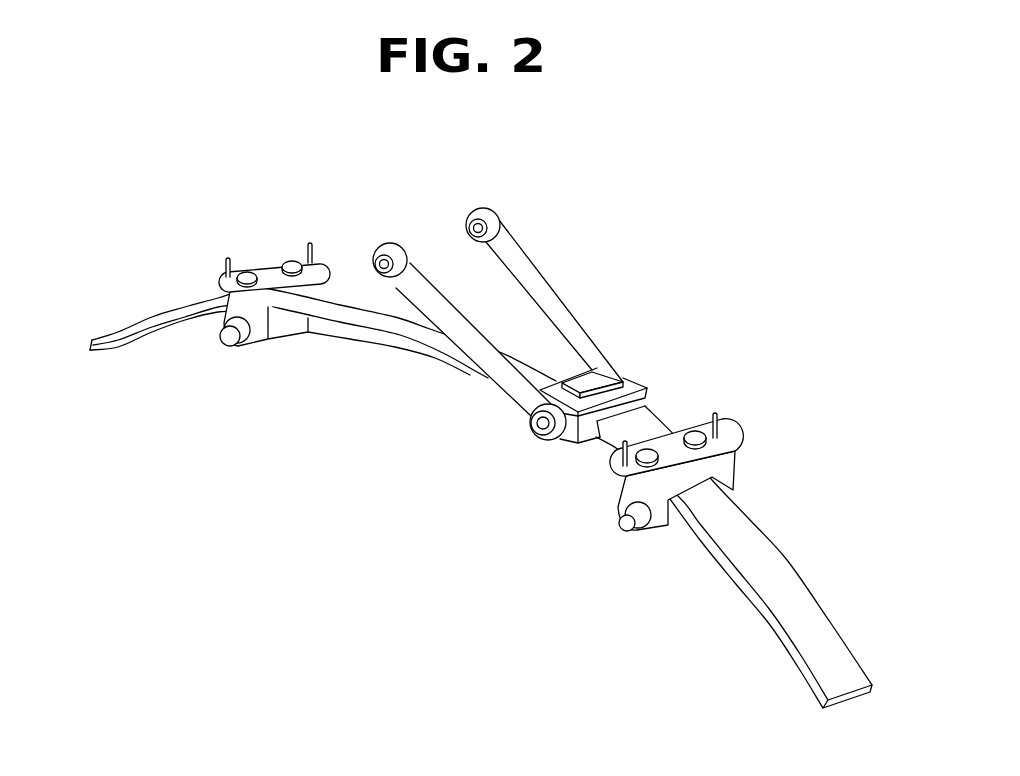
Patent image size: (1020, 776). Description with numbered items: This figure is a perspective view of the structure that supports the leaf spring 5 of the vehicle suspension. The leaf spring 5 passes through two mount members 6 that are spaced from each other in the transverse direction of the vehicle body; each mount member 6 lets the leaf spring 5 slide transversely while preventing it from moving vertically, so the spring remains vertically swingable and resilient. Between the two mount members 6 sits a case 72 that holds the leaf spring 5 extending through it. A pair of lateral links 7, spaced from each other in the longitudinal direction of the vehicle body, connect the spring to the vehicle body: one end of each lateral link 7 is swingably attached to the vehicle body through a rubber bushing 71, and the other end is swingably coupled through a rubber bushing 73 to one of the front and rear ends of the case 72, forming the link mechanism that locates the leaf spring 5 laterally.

The leaf spring 5 is at (823, 637).
The mount member 6 is at (272, 264).
The lateral link 7 is at (462, 342).
The rubber bushing 71 is at (380, 248).
The case 72 is at (643, 368).
The rubber bushing 73 is at (543, 442).